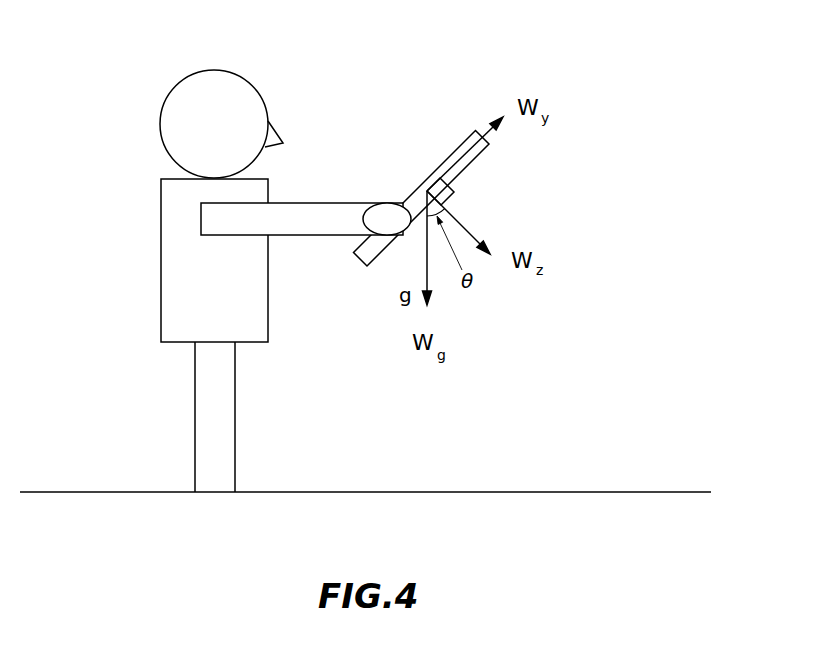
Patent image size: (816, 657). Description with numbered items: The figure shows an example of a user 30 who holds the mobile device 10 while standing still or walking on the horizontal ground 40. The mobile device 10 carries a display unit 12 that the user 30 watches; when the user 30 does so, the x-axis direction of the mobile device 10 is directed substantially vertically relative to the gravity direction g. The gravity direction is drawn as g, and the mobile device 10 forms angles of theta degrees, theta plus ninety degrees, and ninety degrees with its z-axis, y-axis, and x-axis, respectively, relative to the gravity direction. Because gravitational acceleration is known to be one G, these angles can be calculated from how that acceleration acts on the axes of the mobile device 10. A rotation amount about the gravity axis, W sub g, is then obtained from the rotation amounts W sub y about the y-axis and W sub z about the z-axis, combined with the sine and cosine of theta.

The mobile device 10 is at (356, 263).
The display unit 12 is at (444, 161).
The user 30 is at (222, 70).
The horizontal ground 40 is at (598, 490).